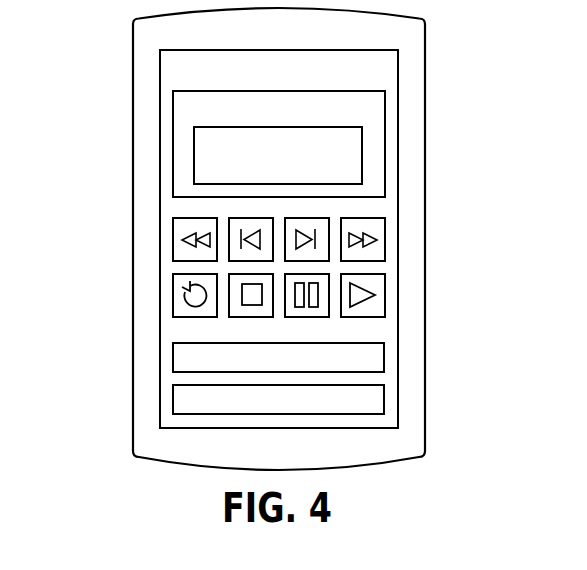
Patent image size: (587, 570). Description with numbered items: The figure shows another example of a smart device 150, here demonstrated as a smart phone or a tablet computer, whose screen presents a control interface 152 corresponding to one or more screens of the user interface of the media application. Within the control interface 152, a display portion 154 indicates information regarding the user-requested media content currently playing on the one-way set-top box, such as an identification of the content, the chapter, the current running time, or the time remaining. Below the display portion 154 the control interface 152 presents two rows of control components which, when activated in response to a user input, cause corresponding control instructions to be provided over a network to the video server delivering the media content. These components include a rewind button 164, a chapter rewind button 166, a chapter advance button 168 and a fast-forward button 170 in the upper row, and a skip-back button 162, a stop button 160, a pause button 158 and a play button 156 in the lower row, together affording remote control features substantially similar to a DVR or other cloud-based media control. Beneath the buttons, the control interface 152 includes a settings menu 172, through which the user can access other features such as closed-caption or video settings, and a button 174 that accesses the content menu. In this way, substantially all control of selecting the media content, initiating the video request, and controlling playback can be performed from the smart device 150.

The smart device 150 is at (133, 46).
The control interface 152 is at (398, 93).
The display portion 154 is at (173, 115).
The play button 156 is at (383, 297).
The pause button 158 is at (313, 318).
The stop button 160 is at (240, 318).
The skip-back button 162 is at (173, 299).
The rewind button 164 is at (173, 236).
The chapter rewind button 166 is at (247, 218).
The chapter advance button 168 is at (310, 218).
The fast-forward button 170 is at (383, 237).
The settings menu 172 is at (384, 368).
The button 174 is at (173, 406).